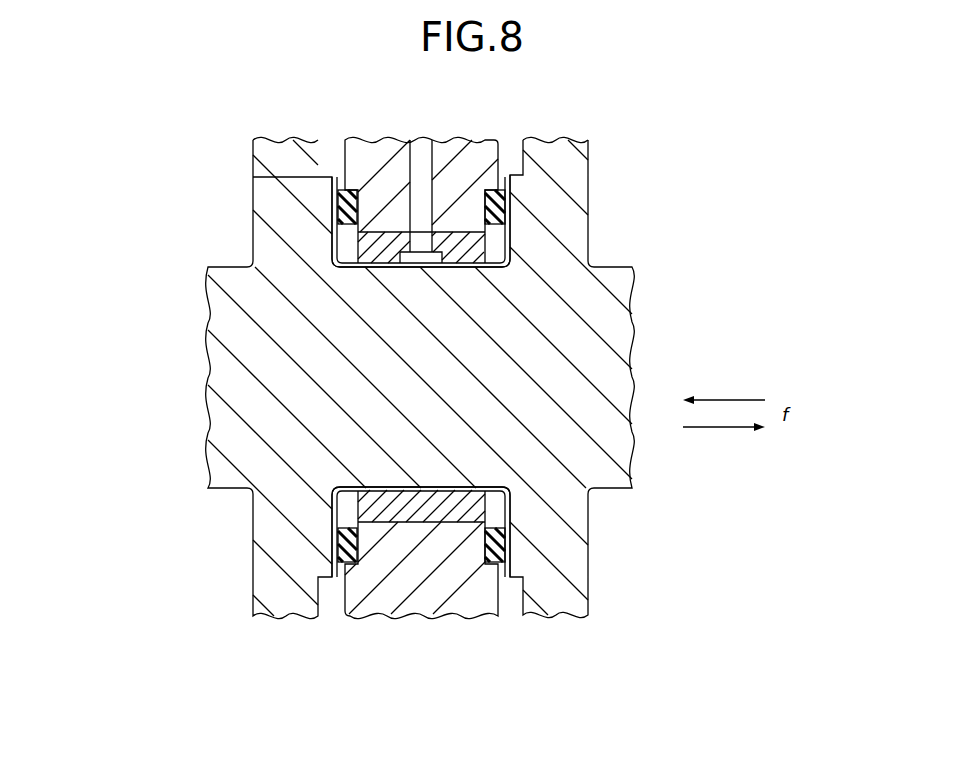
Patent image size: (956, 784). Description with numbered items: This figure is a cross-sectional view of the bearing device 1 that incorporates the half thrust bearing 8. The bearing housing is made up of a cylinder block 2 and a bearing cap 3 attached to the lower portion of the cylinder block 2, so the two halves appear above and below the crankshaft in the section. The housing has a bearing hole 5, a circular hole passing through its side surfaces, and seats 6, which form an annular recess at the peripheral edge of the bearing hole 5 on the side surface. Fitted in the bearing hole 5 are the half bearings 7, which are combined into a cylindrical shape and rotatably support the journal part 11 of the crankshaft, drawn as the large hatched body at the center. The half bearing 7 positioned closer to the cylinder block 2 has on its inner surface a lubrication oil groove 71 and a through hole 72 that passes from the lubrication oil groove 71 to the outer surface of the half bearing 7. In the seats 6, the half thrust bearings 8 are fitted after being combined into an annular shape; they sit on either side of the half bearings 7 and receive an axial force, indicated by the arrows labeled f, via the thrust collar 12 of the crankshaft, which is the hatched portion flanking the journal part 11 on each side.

The bearing device 1 is at (645, 172).
The cylinder block 2 is at (377, 152).
The bearing cap 3 is at (410, 607).
The bearing hole 5 is at (378, 240).
The seats 6 is at (507, 211).
The half bearings 7 is at (512, 249).
The half thrust bearing 8 is at (345, 230).
The journal part 11 is at (367, 413).
The thrust collar 12 is at (327, 176).
The lubrication oil groove 71 is at (420, 258).
The through hole 72 is at (422, 242).